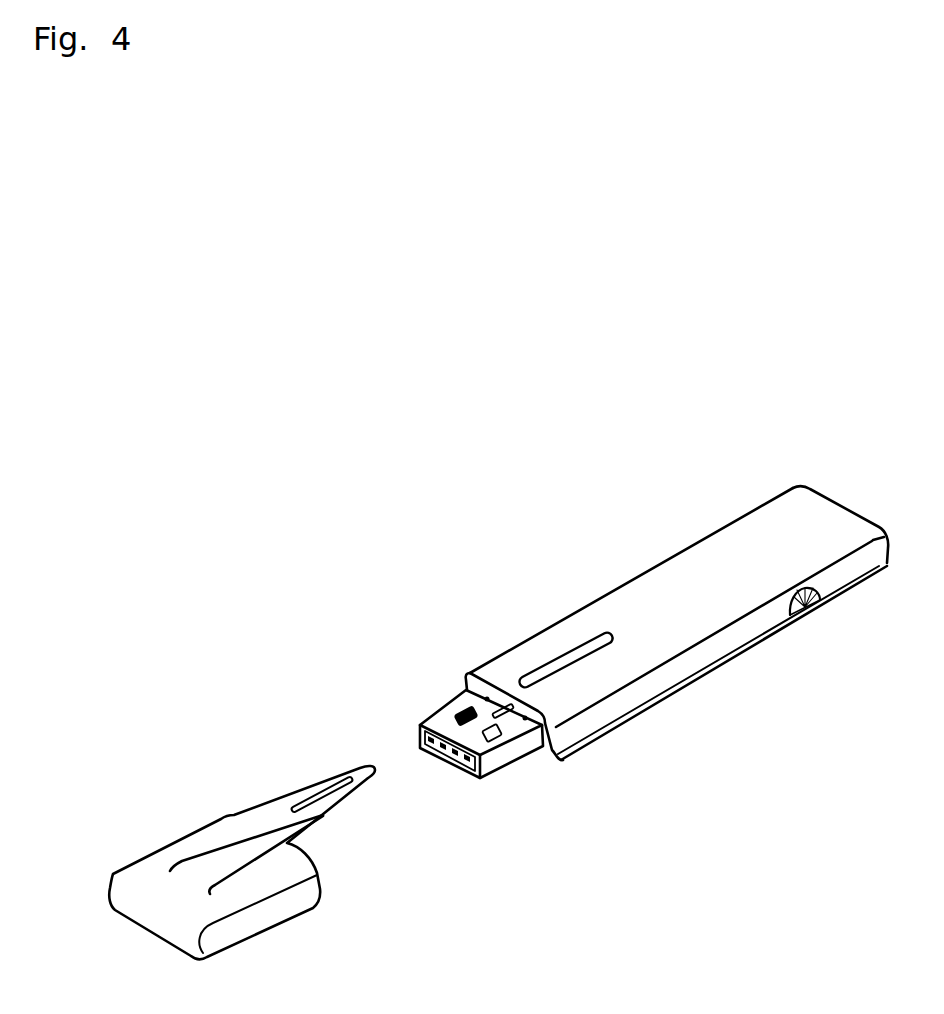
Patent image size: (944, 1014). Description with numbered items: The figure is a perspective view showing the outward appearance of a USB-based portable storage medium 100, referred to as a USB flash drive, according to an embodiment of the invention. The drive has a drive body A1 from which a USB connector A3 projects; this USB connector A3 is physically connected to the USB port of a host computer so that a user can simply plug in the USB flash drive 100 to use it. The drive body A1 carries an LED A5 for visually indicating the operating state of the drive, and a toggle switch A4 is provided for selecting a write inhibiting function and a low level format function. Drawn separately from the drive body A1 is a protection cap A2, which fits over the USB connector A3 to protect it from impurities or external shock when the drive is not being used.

The USB-based portable storage medium 100 is at (411, 335).
The drive body A1 is at (670, 545).
The protection cap A2 is at (217, 805).
The USB connector A3 is at (512, 757).
The toggle switch A4 is at (818, 600).
The LED A5 is at (573, 662).